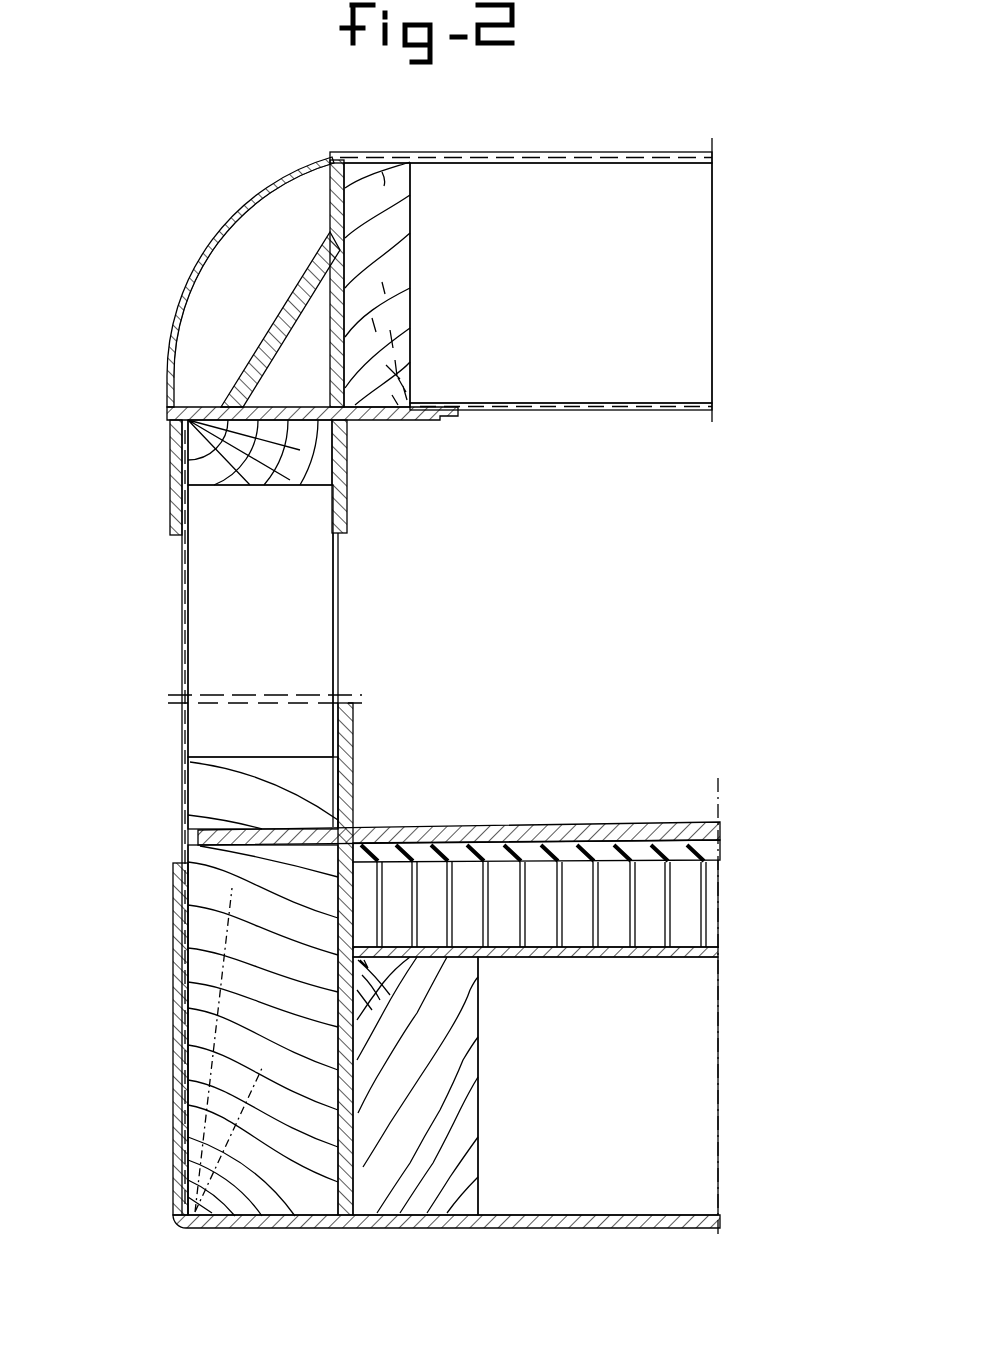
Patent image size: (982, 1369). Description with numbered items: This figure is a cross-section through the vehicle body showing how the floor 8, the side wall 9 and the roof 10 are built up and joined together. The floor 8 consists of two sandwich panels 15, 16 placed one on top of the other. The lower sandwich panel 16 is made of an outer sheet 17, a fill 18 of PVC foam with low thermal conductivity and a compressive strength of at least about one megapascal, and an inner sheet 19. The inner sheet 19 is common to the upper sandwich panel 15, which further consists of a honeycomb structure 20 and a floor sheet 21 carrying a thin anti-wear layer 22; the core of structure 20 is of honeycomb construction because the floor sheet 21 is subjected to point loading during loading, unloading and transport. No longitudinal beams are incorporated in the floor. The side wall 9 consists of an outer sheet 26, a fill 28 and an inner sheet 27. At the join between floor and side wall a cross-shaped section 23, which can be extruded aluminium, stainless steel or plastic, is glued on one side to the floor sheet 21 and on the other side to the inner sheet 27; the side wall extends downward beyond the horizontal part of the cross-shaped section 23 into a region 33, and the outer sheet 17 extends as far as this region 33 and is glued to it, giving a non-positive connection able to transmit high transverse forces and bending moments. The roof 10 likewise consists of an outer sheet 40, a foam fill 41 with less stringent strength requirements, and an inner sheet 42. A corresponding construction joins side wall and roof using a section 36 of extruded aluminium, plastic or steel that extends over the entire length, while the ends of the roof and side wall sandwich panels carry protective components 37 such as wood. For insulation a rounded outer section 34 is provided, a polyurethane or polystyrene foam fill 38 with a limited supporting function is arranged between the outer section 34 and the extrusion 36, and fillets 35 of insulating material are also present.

The floor 8 is at (484, 997).
The side wall panel assembly 9 is at (221, 817).
The roof 10 is at (554, 248).
The sandwich panel 15 is at (497, 866).
The lower sandwich panel 16 is at (484, 1121).
The outer sheet 17 is at (625, 1230).
The fill 18 is at (682, 1024).
The inner sheet 19 is at (698, 954).
The honeycomb structure 20 is at (650, 854).
The floor sheet 21 is at (590, 828).
The anti-wear layer 22 is at (526, 824).
The cross-shaped section 23 is at (354, 828).
The outer sheet 26 is at (180, 586).
The inner sheet 27 is at (343, 589).
The fill 28 is at (305, 658).
The region 33 is at (242, 1088).
The rounded outer section 34 is at (256, 203).
The fillets 35 is at (332, 160).
The section 36 is at (418, 420).
The protective components 37 is at (370, 166).
The foam fill 38 is at (187, 292).
The outer sheet 40 is at (572, 154).
The fill 41 is at (680, 234).
The inner sheet 42 is at (624, 410).